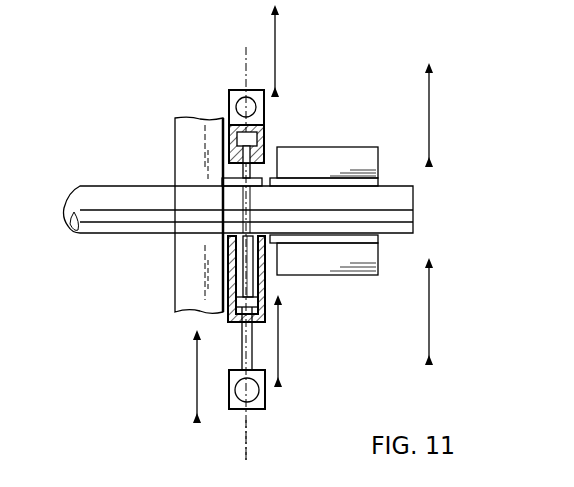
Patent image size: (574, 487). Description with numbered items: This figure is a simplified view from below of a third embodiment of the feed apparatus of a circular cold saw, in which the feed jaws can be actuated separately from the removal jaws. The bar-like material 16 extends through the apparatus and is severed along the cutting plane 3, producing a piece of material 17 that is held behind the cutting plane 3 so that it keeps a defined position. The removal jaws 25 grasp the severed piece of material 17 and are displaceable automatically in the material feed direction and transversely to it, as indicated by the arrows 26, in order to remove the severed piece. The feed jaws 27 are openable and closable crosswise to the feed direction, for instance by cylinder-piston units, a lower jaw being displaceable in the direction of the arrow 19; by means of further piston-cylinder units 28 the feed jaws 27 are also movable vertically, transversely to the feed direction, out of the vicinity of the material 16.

The cutting plane 3 is at (246, 427).
The bar-like material 16 is at (128, 193).
The piece of material 17 is at (400, 203).
The arrow 19 is at (197, 376).
The removal jaws 25 is at (345, 157).
The arrows 26 is at (430, 113).
The feed jaws 27 is at (260, 173).
The piston-cylinder units 28 is at (240, 89).